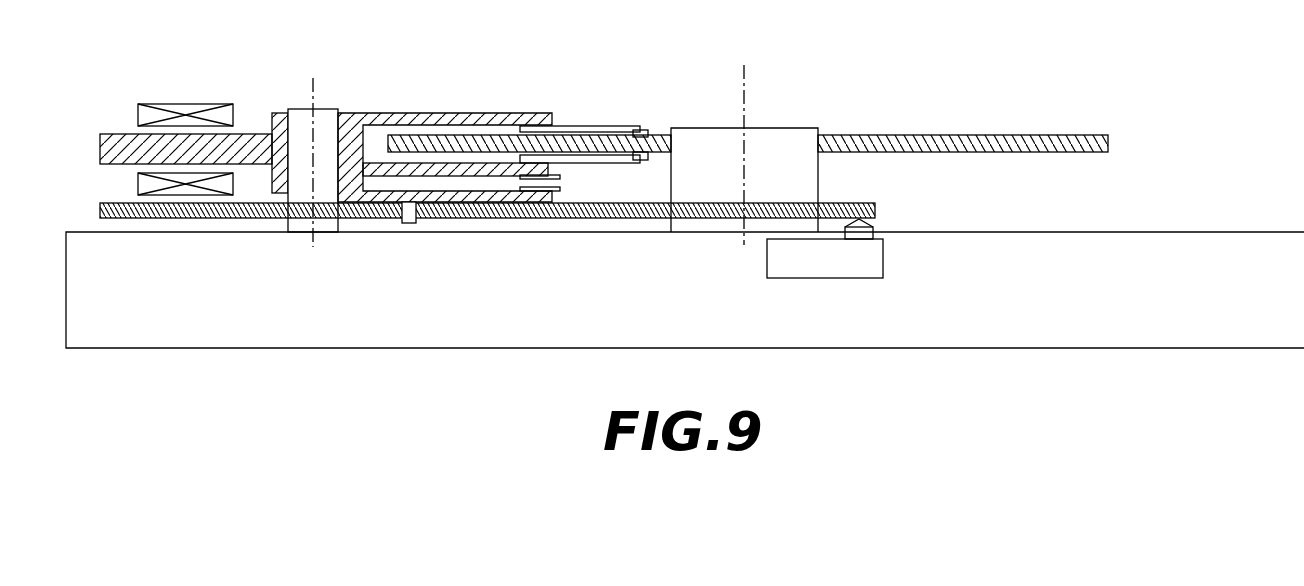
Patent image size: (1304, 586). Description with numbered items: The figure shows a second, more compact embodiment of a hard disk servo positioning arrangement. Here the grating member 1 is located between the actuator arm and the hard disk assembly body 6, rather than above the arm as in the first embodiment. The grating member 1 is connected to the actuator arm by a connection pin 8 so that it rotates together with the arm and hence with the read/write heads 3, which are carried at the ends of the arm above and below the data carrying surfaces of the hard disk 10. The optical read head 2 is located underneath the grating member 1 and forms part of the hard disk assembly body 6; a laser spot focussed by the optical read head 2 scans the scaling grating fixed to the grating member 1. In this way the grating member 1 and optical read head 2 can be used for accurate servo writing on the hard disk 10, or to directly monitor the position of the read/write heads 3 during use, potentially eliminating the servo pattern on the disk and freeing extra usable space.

The grating member 1 is at (855, 203).
The optical read head 2 is at (883, 260).
The read/write heads 3 is at (647, 128).
The hard disk assembly body 6 is at (504, 322).
The connection pin 8 is at (409, 223).
The hard disk 10 is at (1007, 133).